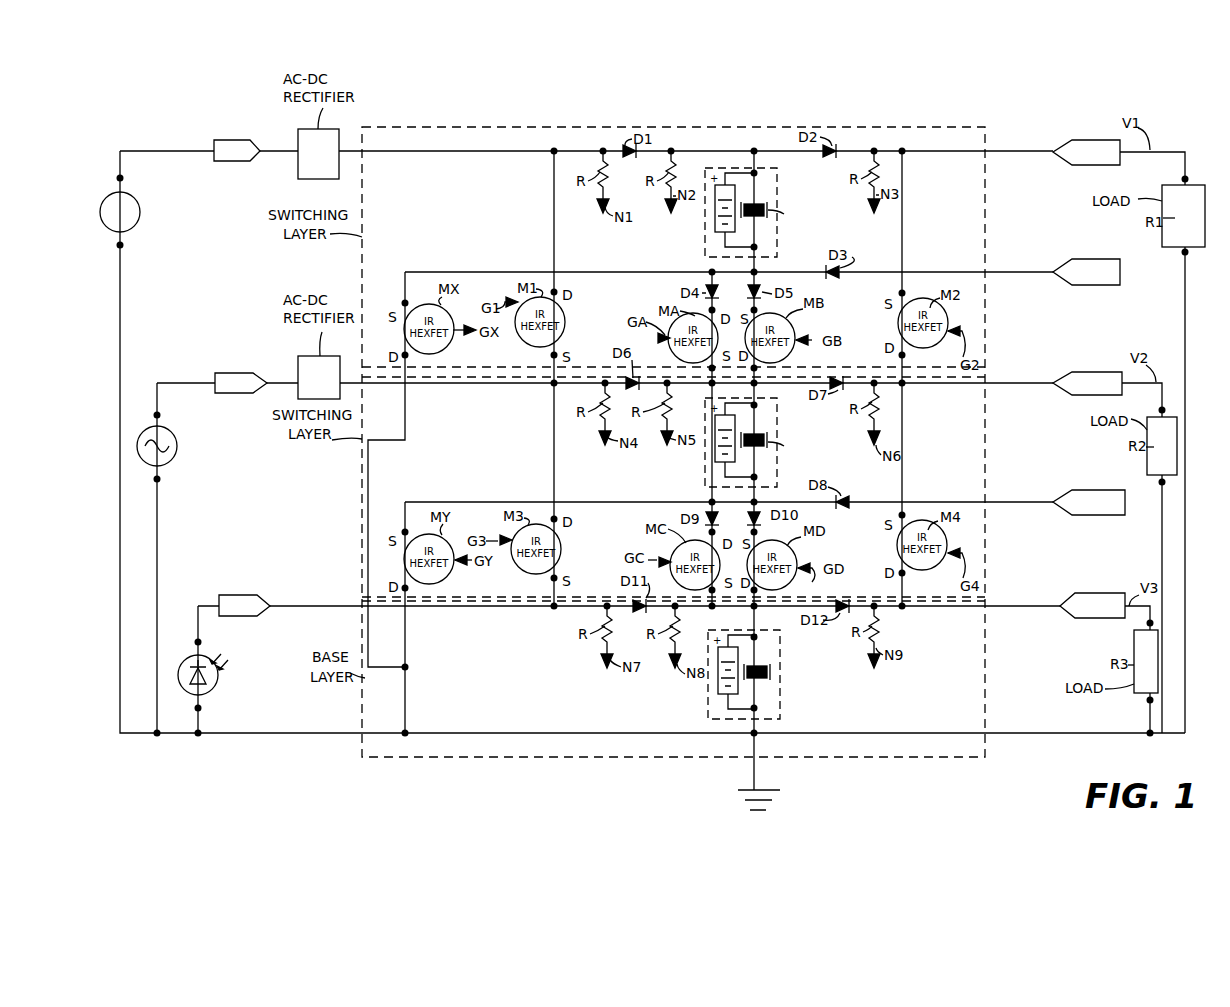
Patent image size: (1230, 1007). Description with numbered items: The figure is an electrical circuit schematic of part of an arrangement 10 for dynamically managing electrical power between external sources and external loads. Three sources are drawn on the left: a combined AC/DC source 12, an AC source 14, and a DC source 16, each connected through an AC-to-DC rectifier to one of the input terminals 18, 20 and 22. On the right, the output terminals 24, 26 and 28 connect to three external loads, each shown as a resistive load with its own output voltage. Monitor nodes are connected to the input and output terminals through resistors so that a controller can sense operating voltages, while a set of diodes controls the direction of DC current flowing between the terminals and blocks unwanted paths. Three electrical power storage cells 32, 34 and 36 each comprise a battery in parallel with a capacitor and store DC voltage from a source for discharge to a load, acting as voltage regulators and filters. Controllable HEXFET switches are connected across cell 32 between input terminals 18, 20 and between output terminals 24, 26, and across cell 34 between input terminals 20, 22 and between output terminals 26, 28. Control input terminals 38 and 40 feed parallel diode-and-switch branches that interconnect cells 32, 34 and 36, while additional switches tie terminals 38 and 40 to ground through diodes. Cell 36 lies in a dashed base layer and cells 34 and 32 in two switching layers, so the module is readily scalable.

The arrangement for dynamically managing electrical power 10 is at (191, 124).
The combined AC/DC source 12 is at (106, 198).
The AC source 14 is at (147, 427).
The DC source 16 is at (185, 657).
The input terminal 18 is at (243, 140).
The input terminal 20 is at (246, 373).
The input terminal 22 is at (256, 595).
The output terminal 24 is at (1090, 140).
The output terminal 26 is at (1064, 372).
The output terminal 28 is at (1108, 593).
The electrical power storage cell 32 is at (777, 180).
The electrical power storage cell 34 is at (777, 412).
The electrical power storage cell 36 is at (780, 644).
The control input terminal 38 is at (1076, 260).
The control input terminal 40 is at (1081, 490).